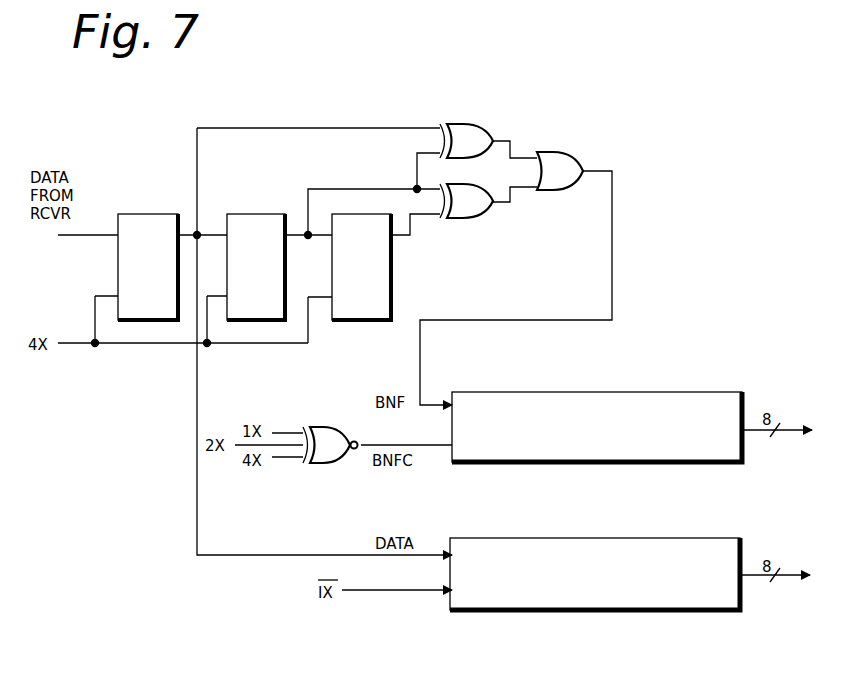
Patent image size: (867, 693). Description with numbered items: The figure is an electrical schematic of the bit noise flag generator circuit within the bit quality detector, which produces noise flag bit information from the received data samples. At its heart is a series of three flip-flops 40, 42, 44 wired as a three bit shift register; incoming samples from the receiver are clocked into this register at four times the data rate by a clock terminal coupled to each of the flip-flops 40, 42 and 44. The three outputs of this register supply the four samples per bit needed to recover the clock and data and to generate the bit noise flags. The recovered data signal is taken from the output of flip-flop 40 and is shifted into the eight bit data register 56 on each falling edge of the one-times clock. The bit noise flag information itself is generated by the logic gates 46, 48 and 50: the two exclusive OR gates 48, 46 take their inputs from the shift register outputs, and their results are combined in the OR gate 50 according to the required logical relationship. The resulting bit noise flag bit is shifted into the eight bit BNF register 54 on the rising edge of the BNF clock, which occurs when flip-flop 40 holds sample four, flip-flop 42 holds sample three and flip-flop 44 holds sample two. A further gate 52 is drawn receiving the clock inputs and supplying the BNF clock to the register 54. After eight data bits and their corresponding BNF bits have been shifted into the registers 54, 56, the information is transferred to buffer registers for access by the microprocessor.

The flip-flop 40 is at (143, 214).
The flip-flop 42 is at (250, 214).
The flip-flop 44 is at (392, 284).
The exclusive OR gate 46 is at (466, 220).
The exclusive OR gate 48 is at (478, 124).
The OR gate 50 is at (560, 152).
The NAND gate 52 is at (328, 427).
The 8 bit BNF register 54 is at (705, 392).
The 8 bit data register 56 is at (683, 538).